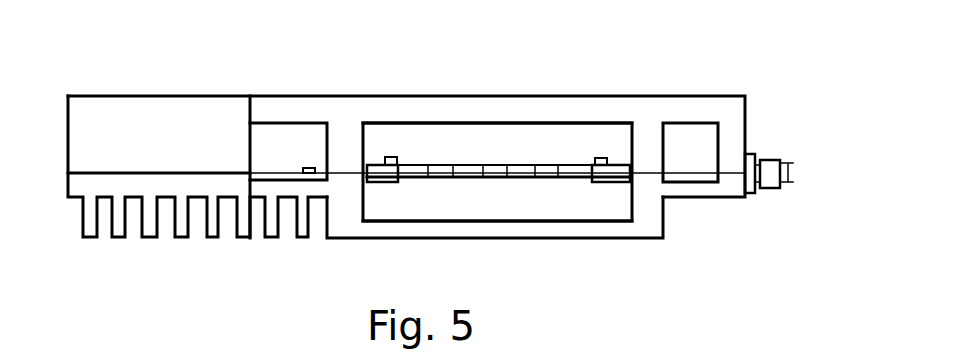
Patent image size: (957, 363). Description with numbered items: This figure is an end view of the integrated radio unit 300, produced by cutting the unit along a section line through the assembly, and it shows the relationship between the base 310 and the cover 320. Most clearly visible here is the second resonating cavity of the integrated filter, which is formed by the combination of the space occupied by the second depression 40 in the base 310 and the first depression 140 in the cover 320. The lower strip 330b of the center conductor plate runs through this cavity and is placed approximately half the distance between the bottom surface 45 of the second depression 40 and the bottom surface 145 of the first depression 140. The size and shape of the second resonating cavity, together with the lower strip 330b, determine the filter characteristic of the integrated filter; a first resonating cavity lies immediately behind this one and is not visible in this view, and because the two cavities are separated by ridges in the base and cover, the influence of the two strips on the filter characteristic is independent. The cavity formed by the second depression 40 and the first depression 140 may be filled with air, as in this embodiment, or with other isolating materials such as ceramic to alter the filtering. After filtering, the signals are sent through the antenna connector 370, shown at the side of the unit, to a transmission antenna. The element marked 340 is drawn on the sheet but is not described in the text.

The integrated radio unit 300 is at (78, 50).
The cover 320 is at (745, 108).
The base 310 is at (663, 222).
The heat sink base plate 340 is at (292, 182).
The second depression 40 is at (597, 206).
The bottom surface of the first depression 145 is at (427, 125).
The first depression 140 is at (505, 137).
The bottom surface of the second depression 45 is at (533, 215).
The lower strip 330b is at (460, 178).
The antenna connector 370 is at (766, 189).